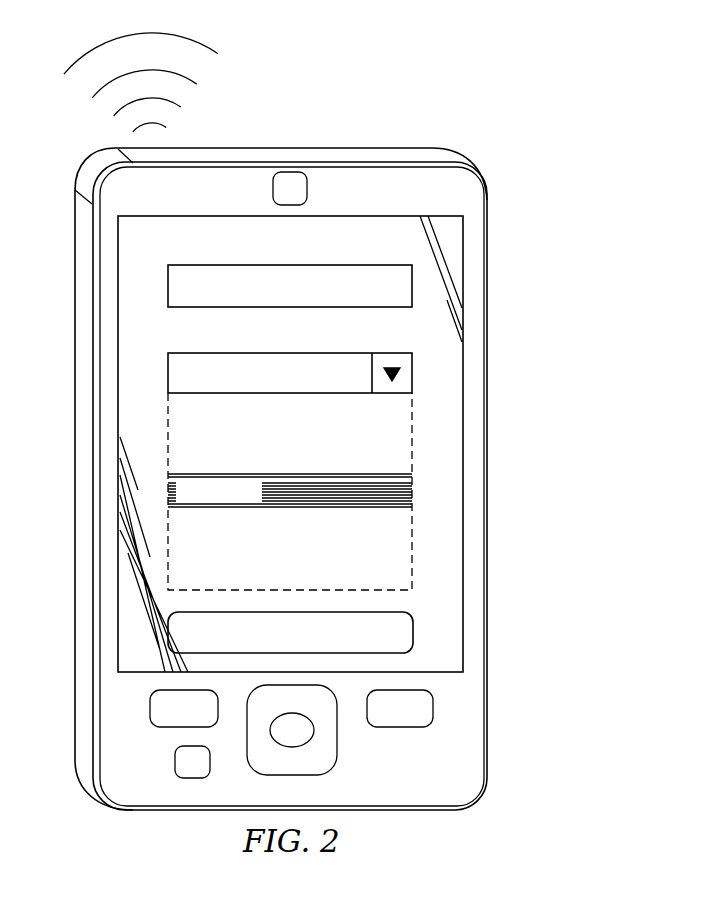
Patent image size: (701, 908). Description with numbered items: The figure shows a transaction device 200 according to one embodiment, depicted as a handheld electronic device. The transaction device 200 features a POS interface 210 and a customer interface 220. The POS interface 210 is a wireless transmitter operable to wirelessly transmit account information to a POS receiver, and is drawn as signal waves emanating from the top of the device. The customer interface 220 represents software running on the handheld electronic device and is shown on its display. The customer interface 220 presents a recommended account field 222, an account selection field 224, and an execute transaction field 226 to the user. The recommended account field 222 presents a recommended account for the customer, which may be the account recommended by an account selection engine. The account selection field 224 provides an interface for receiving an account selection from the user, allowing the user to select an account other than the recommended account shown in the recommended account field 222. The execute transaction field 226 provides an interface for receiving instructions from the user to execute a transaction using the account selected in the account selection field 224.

The transaction device 200 is at (417, 106).
The POS interface 210 is at (213, 98).
The customer interface 220 is at (339, 447).
The recommended account field 222 is at (412, 284).
The account selection field 224 is at (412, 375).
The execute transaction field 226 is at (415, 630).